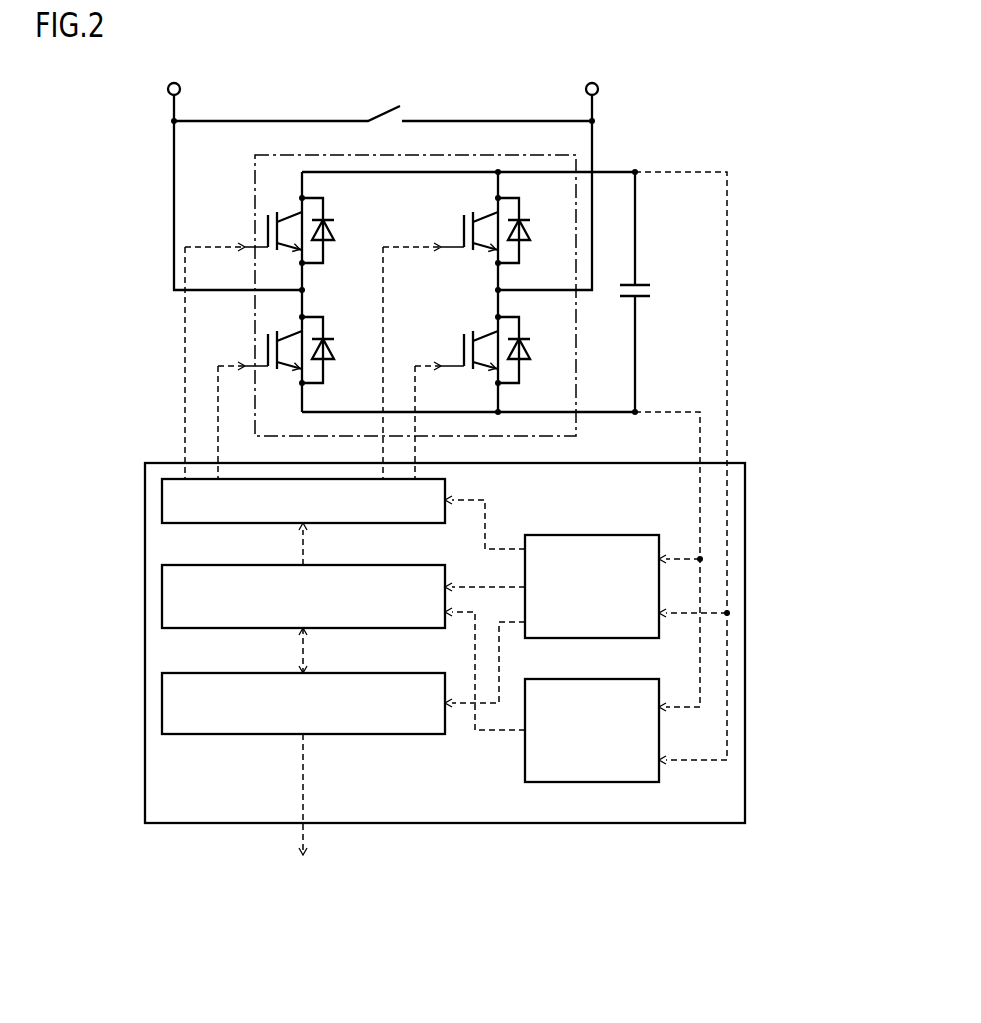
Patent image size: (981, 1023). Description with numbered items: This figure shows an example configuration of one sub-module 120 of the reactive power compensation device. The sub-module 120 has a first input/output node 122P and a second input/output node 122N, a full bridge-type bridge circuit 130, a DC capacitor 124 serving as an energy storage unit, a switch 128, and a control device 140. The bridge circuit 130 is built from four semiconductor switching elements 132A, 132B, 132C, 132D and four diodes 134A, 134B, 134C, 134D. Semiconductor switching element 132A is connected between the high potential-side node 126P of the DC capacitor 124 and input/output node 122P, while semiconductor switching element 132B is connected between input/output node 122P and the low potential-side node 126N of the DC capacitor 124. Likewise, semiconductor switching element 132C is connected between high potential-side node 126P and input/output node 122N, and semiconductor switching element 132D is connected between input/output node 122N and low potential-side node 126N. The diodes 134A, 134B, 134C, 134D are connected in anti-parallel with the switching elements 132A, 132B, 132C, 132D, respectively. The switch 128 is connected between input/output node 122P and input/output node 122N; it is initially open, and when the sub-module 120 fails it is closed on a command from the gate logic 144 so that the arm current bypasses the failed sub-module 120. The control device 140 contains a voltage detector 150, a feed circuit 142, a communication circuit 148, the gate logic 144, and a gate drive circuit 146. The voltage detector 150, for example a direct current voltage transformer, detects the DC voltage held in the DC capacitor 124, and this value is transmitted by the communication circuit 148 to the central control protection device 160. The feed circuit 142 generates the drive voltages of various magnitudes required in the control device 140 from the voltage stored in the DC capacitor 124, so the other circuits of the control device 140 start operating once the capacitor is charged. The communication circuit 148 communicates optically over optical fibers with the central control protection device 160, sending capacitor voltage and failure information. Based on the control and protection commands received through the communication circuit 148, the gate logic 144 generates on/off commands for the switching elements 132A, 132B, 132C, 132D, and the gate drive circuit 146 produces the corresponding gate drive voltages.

The sub-module 120 is at (792, 65).
The first input/output node 122P is at (173, 81).
The second input/output node 122N is at (592, 81).
The DC capacitor 124 is at (652, 290).
The high potential-side node 126P is at (640, 170).
The low potential-side node 126N is at (640, 410).
The switch 128 is at (378, 113).
The bridge circuit 130 is at (458, 153).
The semiconductor switching element 132A is at (290, 214).
The semiconductor switching element 132B is at (290, 333).
The semiconductor switching element 132C is at (486, 214).
The semiconductor switching element 132D is at (486, 333).
The diode 134A is at (330, 238).
The diode 134B is at (330, 357).
The diode 134C is at (528, 238).
The diode 134D is at (528, 357).
The control device 140 is at (745, 586).
The feed circuit 142 is at (605, 535).
The gate logic 144 is at (162, 598).
The gate drive circuit 146 is at (162, 498).
The communication circuit 148 is at (162, 703).
The voltage detector 150 is at (605, 679).
The central control protection device 160 is at (307, 889).